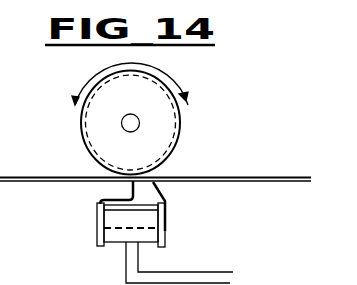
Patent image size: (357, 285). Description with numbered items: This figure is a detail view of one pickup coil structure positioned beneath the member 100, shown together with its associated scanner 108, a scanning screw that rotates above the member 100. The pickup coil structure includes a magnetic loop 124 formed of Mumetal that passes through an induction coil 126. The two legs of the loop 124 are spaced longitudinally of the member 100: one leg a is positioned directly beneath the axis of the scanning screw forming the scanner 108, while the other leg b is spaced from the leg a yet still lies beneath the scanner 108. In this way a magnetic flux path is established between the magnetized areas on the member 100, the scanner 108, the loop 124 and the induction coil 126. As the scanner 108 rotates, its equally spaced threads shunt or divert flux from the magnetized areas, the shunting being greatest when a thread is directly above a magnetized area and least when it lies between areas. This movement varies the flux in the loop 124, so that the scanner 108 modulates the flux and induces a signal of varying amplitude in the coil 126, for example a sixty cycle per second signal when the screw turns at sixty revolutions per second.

The scanner 108 is at (162, 125).
The member 100 is at (255, 178).
The magnetic loop 124 is at (98, 204).
The induction coil 126 is at (165, 238).
The leg a is at (130, 193).
The leg b is at (164, 192).